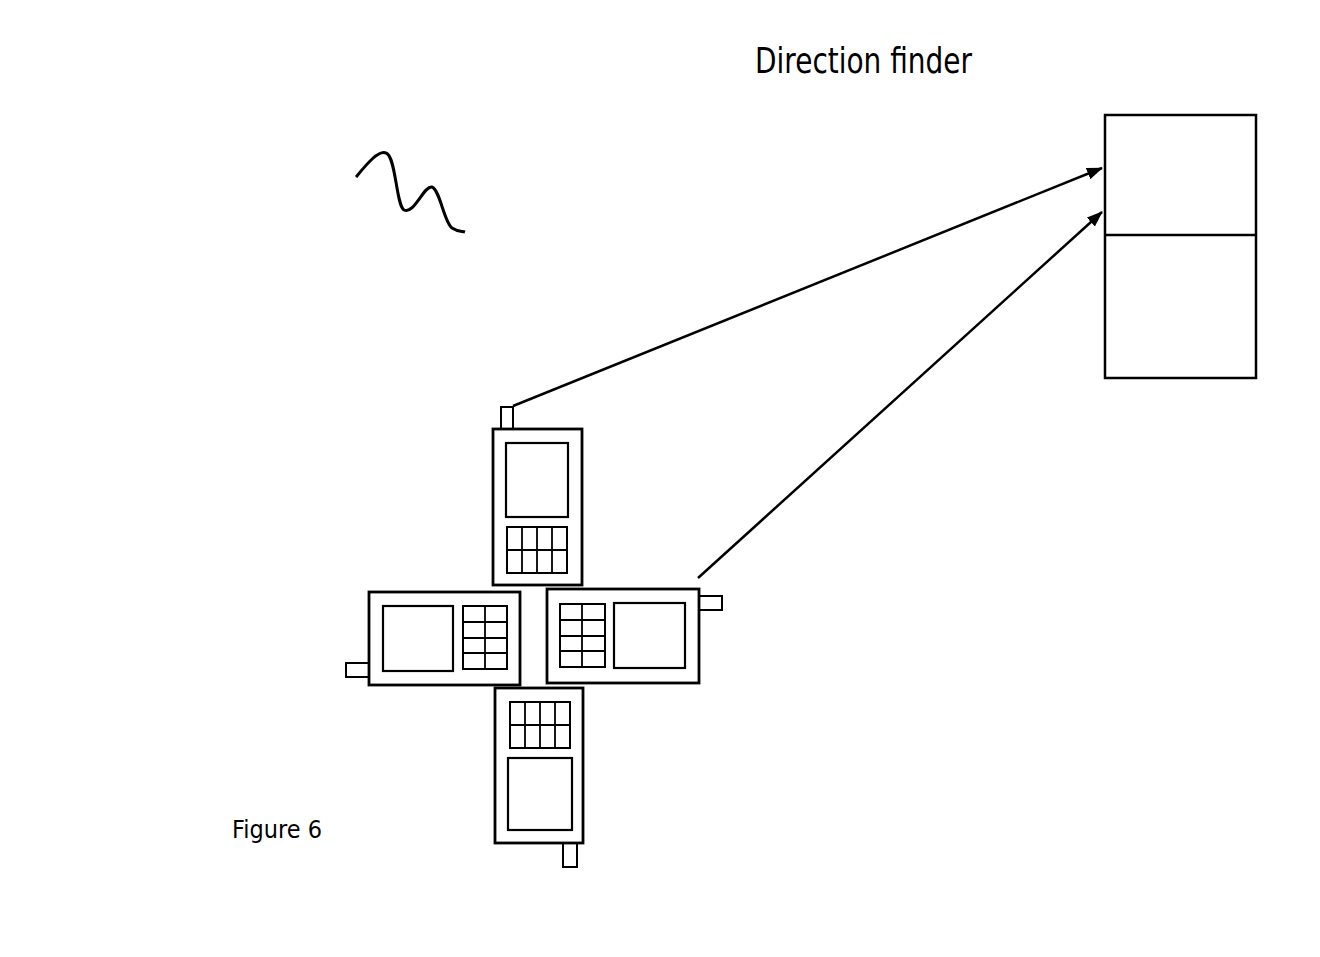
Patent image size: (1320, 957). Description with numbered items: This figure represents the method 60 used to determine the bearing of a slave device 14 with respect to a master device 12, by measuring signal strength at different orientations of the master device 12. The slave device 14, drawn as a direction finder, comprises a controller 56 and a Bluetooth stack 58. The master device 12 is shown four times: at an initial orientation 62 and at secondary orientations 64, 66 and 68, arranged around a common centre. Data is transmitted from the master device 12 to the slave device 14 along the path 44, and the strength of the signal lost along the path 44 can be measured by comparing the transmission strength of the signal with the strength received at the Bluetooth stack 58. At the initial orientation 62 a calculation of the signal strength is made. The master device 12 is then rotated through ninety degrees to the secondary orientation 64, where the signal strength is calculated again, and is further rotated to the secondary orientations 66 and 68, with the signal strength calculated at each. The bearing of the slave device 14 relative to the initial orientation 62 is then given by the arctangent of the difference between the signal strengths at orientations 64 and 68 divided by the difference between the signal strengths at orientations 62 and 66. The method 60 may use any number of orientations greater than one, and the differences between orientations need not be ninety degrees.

The master device 12 is at (270, 344).
The slave device 14 is at (1193, 228).
The path 44 is at (807, 373).
The controller 56 is at (1200, 189).
The Bluetooth stack 58 is at (1210, 317).
The method 60 is at (381, 192).
The initial orientation 62 is at (516, 496).
The secondary orientation 64 is at (657, 636).
The secondary orientation 66 is at (567, 777).
The secondary orientation 68 is at (421, 658).